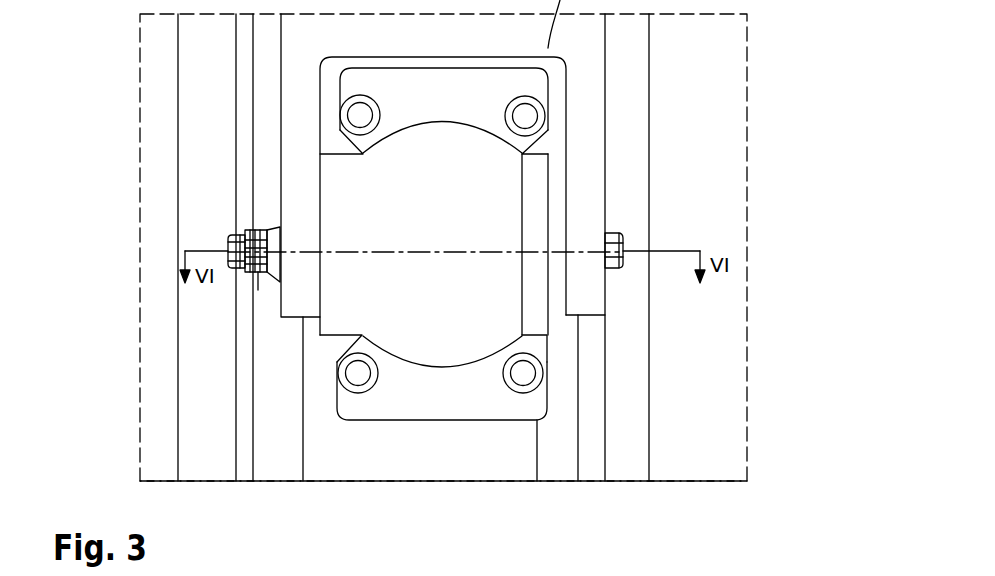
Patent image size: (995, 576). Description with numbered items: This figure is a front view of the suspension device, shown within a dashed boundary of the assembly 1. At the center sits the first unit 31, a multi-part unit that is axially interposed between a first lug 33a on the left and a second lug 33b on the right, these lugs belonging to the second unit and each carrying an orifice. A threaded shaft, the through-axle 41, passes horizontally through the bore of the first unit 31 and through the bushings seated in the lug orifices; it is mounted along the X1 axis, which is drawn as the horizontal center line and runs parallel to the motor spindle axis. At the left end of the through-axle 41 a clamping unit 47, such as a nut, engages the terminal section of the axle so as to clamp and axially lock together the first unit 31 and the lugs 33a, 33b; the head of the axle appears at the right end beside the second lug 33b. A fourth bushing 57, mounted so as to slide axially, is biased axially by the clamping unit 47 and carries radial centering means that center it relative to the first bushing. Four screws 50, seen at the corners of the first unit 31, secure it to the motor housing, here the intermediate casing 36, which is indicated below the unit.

The linear actuator 1 is at (217, 487).
The first unit 31 is at (325, 349).
The first lug 33a is at (297, 190).
The second lug 33b is at (586, 146).
The intermediate casing 36 is at (425, 460).
The threaded shaft 41 is at (617, 232).
The clamping unit 47 is at (258, 272).
The screws 50 is at (360, 115).
The fourth bushing 57 is at (277, 222).
The X1 axis X1 is at (475, 254).